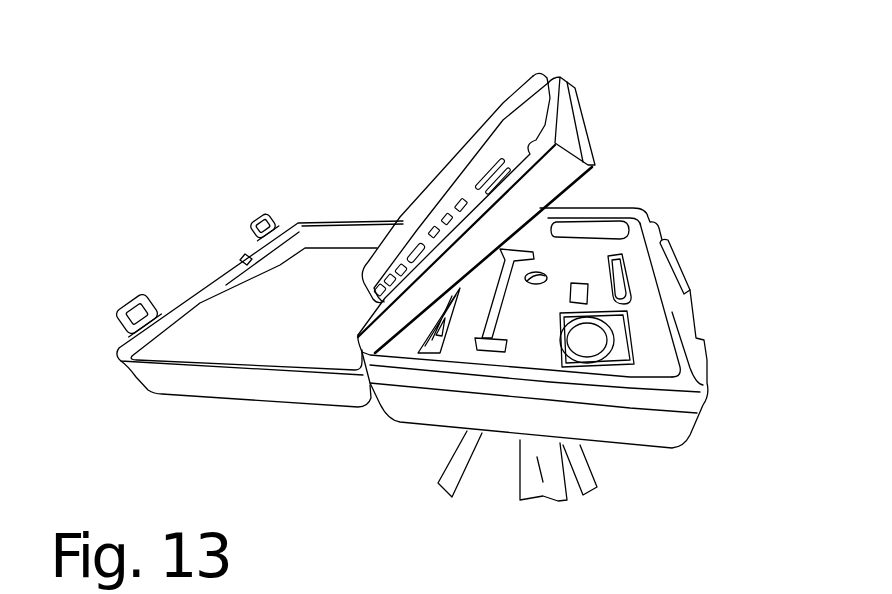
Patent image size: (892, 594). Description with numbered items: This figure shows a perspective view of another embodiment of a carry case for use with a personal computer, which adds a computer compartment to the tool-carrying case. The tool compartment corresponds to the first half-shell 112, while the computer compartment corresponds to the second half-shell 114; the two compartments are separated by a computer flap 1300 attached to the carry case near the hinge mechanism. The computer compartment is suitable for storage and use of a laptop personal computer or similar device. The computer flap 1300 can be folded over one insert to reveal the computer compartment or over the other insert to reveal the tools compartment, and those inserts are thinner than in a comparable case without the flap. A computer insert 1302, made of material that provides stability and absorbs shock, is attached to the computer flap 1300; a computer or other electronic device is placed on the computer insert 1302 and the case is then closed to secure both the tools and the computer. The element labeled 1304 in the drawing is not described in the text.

The first half-shell 112 is at (678, 445).
The second half-shell 114 is at (138, 385).
The computer flap 1300 is at (592, 140).
The computer insert 1302 is at (558, 83).
The keyboard portion 1304 is at (505, 105).